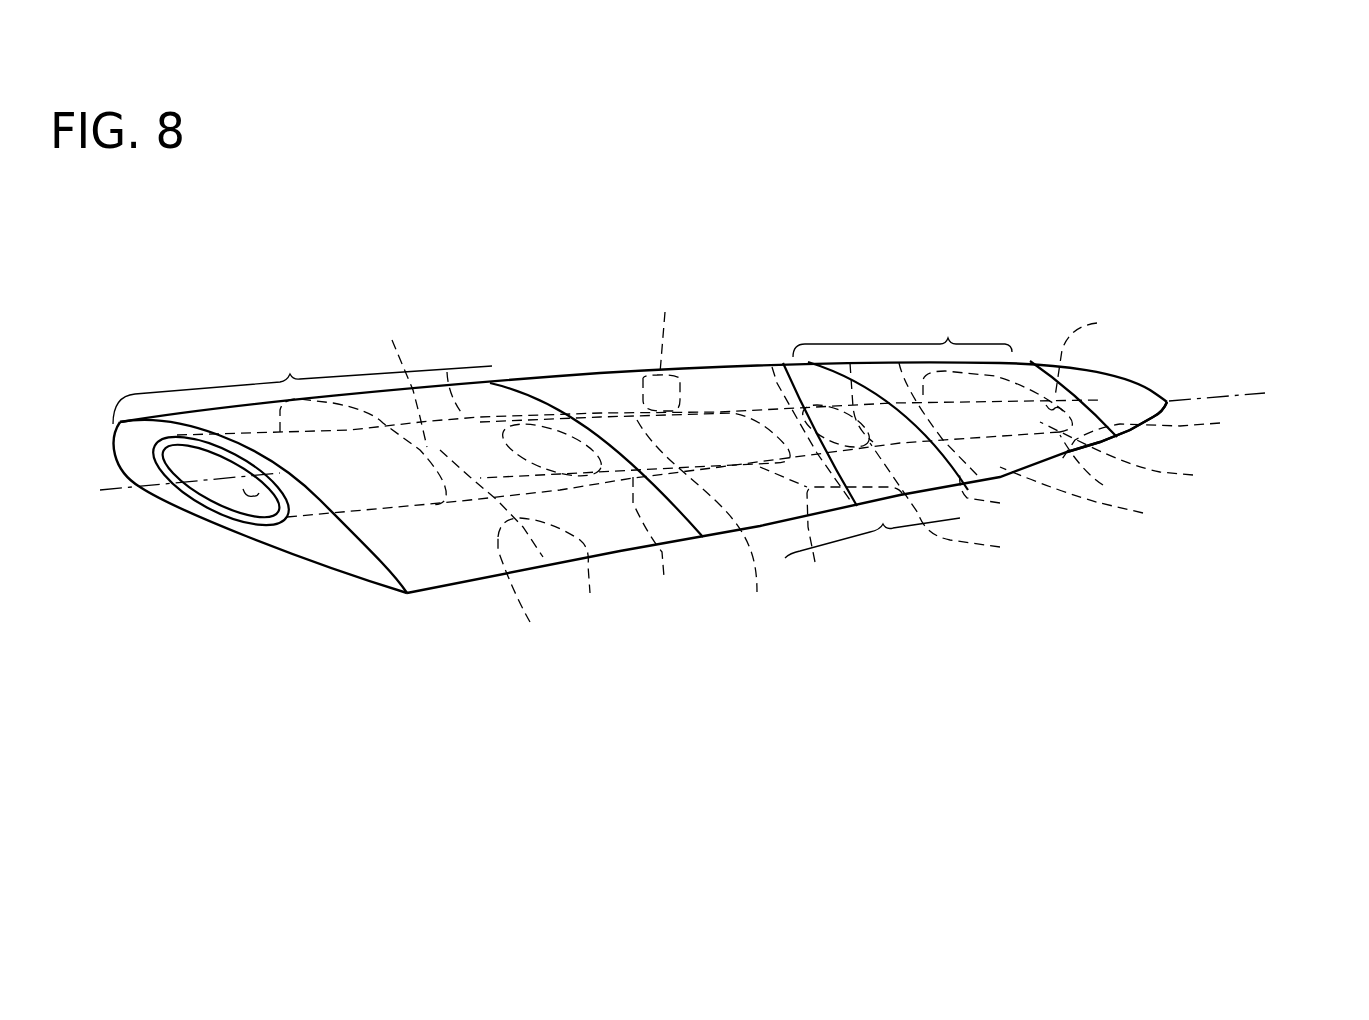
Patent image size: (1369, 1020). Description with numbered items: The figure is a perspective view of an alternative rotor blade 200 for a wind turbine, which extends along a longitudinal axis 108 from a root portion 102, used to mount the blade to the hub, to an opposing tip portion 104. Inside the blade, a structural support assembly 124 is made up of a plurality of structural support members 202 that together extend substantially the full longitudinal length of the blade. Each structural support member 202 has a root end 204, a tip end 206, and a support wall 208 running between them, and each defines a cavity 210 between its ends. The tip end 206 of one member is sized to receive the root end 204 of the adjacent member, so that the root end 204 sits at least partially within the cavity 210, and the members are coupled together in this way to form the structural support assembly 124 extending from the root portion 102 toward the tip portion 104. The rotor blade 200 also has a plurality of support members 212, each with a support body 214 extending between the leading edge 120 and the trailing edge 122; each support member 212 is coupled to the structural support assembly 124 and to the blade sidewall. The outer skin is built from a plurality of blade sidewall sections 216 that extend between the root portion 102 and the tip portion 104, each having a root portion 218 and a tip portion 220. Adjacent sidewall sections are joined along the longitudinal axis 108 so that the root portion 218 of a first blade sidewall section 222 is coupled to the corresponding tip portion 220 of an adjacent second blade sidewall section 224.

The root portion 102 is at (452, 617).
The tip portion 104 is at (1222, 449).
The longitudinal axis 108 is at (1246, 393).
The leading edge 120 is at (630, 372).
The trailing edge 122 is at (857, 506).
The structural support assembly 124 is at (706, 560).
The rotor blade 200 is at (1034, 277).
The structural support member 202 is at (447, 372).
The root end 204 is at (850, 363).
The tip end 206 is at (777, 517).
The support wall 208 is at (776, 405).
The cavity 210 is at (245, 491).
The support member 212 is at (866, 511).
The support body 214 is at (793, 544).
The blade sidewall section 216 is at (562, 438).
The root portion 218 is at (518, 379).
The tip portion 220 is at (783, 363).
The first blade sidewall section 222 is at (213, 362).
The second blade sidewall section 224 is at (848, 614).